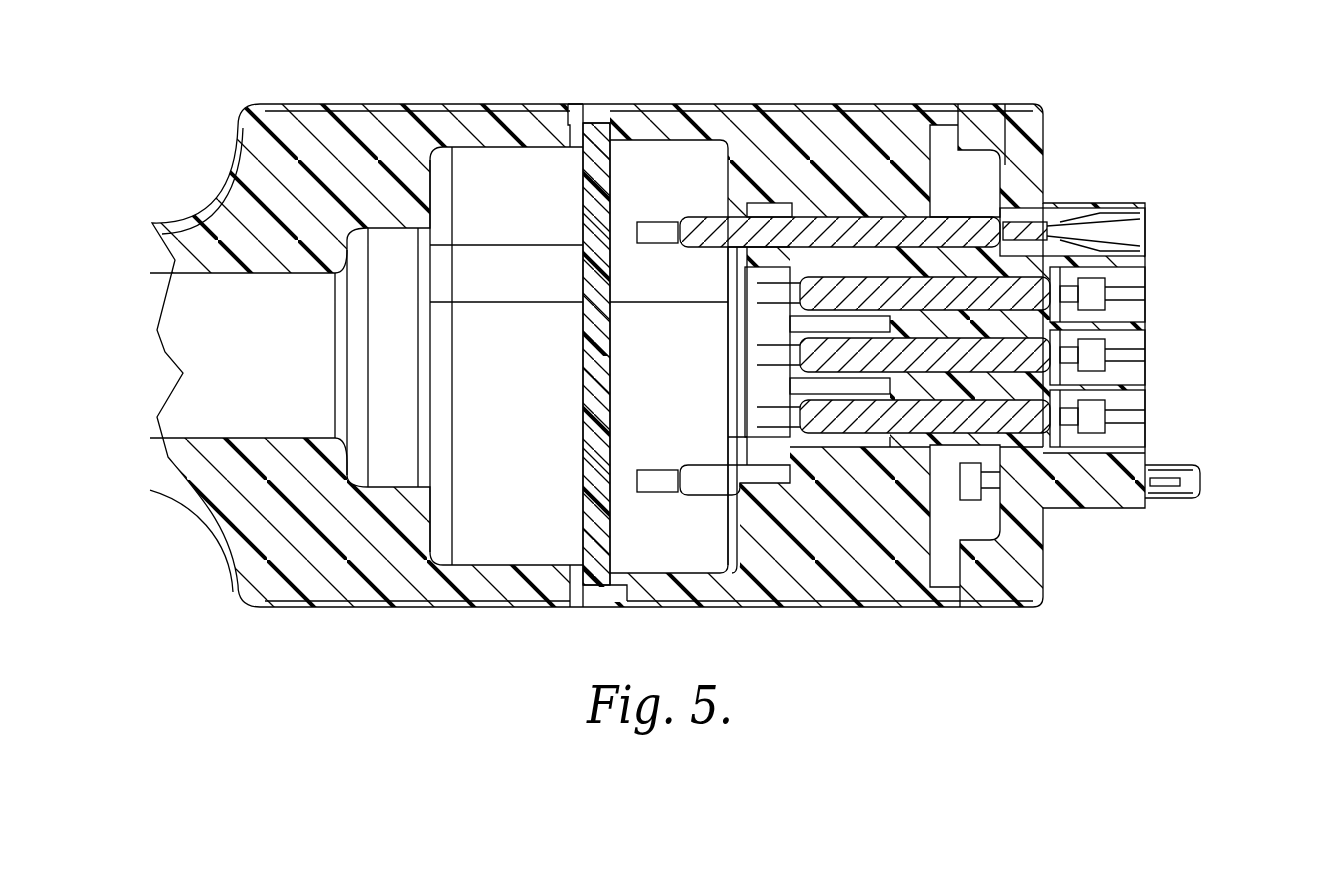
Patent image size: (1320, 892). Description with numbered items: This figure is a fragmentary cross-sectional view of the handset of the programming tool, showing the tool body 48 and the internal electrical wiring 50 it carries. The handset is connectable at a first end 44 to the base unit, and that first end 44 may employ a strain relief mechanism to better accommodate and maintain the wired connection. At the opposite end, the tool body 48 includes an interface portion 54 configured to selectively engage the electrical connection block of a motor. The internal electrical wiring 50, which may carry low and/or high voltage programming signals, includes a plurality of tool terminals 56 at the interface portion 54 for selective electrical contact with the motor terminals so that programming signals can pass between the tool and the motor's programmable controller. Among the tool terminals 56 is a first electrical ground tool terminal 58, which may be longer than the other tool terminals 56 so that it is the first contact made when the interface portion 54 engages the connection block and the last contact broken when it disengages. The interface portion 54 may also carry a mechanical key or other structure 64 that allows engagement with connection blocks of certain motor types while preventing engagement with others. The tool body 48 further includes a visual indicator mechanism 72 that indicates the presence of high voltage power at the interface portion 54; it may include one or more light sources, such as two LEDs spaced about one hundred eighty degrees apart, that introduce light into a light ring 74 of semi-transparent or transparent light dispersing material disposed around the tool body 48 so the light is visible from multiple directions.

The first end 44 is at (850, 75).
The tool body 48 is at (308, 107).
The internal electrical wiring 50 is at (757, 375).
The interface portion 54 is at (1078, 145).
The tool terminals 56 is at (1155, 290).
The first electrical ground tool terminal 58 is at (1105, 355).
The mechanical key or other structure 64 is at (1198, 483).
The visual indicator mechanism 72 is at (585, 95).
The light ring 74 is at (609, 115).